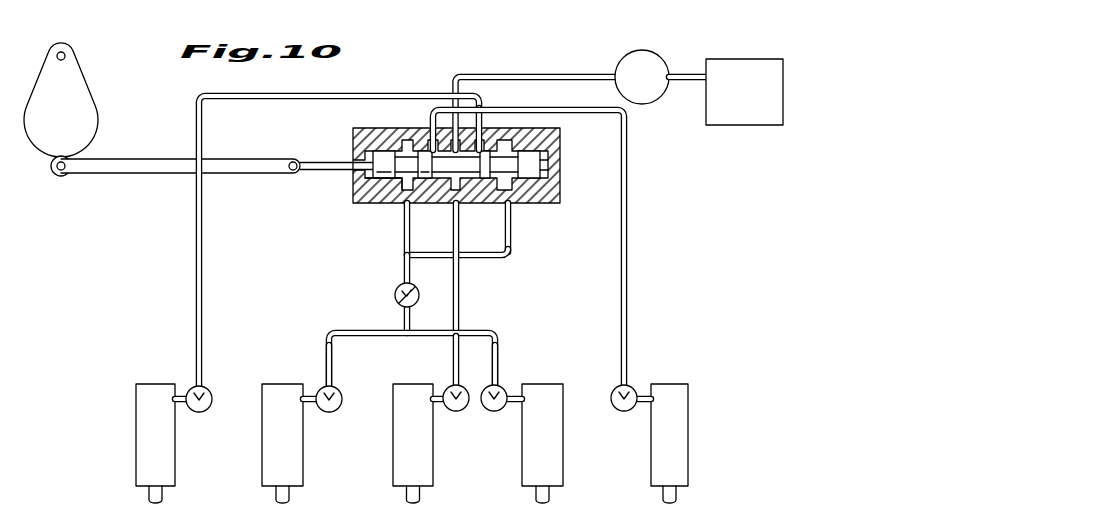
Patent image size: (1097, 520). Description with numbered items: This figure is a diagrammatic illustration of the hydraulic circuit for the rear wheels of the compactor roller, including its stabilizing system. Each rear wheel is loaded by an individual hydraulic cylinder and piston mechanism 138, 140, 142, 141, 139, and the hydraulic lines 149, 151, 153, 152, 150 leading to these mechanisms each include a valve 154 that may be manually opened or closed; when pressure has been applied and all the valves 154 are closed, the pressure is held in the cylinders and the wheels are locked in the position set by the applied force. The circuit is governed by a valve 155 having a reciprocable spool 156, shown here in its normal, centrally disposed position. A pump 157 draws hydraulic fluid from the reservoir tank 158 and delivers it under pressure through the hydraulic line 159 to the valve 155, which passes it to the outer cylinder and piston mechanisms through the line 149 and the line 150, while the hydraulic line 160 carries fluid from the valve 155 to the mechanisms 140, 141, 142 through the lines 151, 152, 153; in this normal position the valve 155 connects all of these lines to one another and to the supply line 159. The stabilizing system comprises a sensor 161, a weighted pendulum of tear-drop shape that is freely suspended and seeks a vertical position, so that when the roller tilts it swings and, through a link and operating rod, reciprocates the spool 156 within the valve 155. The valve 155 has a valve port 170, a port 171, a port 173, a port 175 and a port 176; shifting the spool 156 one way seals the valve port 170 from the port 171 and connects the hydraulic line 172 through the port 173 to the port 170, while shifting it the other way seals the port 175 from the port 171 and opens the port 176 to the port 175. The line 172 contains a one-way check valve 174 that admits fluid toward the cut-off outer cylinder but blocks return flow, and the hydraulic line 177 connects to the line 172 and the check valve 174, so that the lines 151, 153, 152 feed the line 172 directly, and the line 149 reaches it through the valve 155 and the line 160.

The sensor 161 is at (87, 107).
The valve 155 is at (557, 203).
The spool 156 is at (385, 160).
The valve port 170 is at (428, 142).
The port 173 is at (385, 204).
The port 175 is at (480, 143).
The hydraulic line 159 is at (570, 74).
The hydraulic line 149 is at (195, 372).
The line 150 is at (627, 336).
The pump 157 is at (651, 52).
The reservoir tank 158 is at (733, 65).
The valve port 171 is at (448, 204).
The hydraulic line 172 is at (405, 268).
The one-way check valve 174 is at (395, 294).
The port 176 is at (512, 205).
The hydraulic line 177 is at (507, 257).
The hydraulic line 160 is at (462, 300).
The hydraulic line 151 is at (327, 358).
The hydraulic line 152 is at (497, 355).
The hydraulic line 153 is at (454, 363).
The valve 154 is at (206, 410).
The cylinder and piston mechanism 138 is at (163, 465).
The cylinder and piston mechanism 140 is at (290, 465).
The cylinder and piston mechanism 142 is at (425, 466).
The cylinder and piston mechanism 141 is at (553, 466).
The cylinder and piston mechanism 139 is at (685, 466).